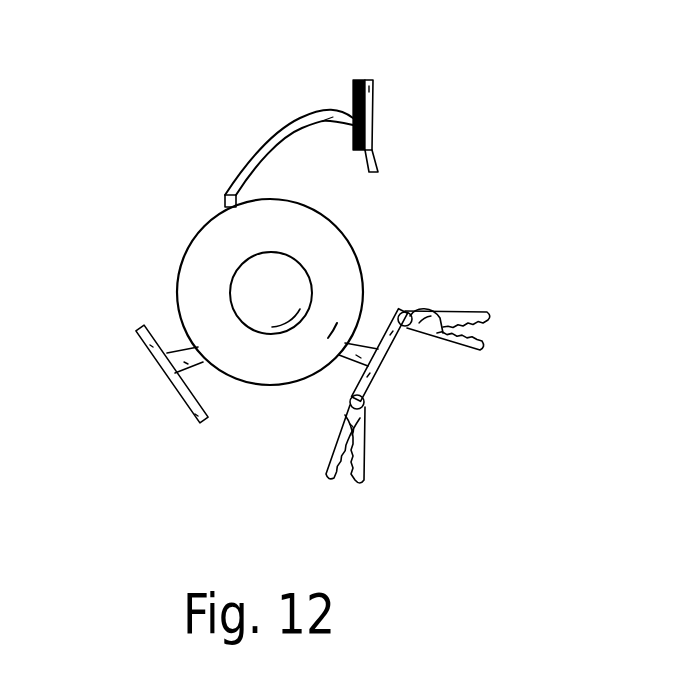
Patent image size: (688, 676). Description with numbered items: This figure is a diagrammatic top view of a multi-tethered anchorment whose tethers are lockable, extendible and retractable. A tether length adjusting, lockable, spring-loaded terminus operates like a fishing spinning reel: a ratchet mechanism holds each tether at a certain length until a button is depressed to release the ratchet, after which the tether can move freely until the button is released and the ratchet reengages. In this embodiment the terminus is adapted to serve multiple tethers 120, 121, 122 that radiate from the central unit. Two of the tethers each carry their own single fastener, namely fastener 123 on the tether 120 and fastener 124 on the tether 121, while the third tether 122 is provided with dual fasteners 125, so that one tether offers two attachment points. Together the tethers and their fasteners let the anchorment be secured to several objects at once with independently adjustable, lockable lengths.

The tether 120 is at (266, 146).
The tether 121 is at (178, 347).
The tether 122 is at (363, 277).
The fastener 123 is at (373, 98).
The fastener 124 is at (193, 417).
The dual fasteners 125 is at (363, 463).